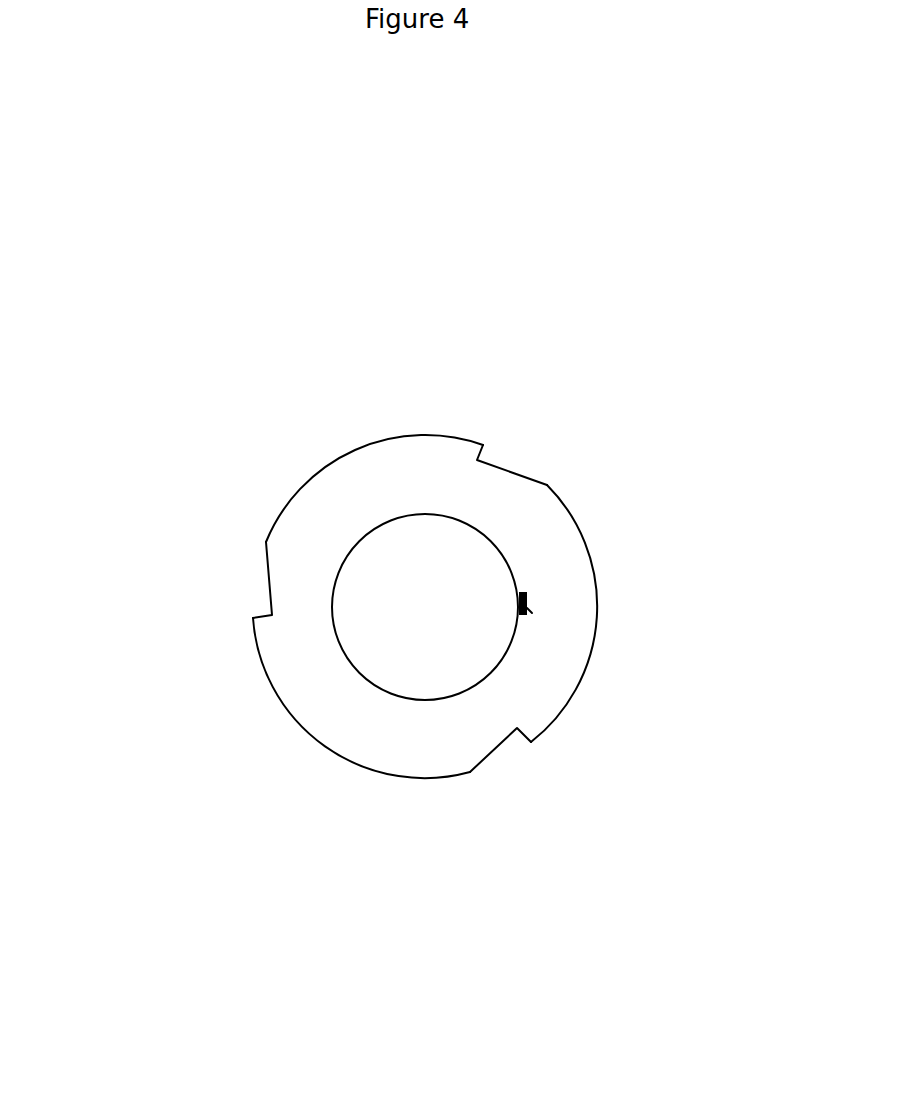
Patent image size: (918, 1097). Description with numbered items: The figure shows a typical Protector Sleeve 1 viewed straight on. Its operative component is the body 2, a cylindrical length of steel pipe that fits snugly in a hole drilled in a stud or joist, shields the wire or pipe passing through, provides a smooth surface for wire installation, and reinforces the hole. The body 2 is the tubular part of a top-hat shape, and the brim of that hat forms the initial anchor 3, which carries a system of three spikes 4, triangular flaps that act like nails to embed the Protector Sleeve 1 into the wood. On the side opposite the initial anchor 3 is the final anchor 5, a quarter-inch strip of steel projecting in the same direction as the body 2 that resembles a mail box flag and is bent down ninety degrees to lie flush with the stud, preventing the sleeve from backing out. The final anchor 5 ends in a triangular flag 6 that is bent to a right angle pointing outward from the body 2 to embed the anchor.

The Protector Sleeve 1 is at (170, 337).
The body 2 is at (422, 515).
The initial anchor 3 is at (337, 712).
The spikes 4 is at (482, 448).
The final anchor 5 is at (527, 603).
The triangular flag 6 is at (528, 609).